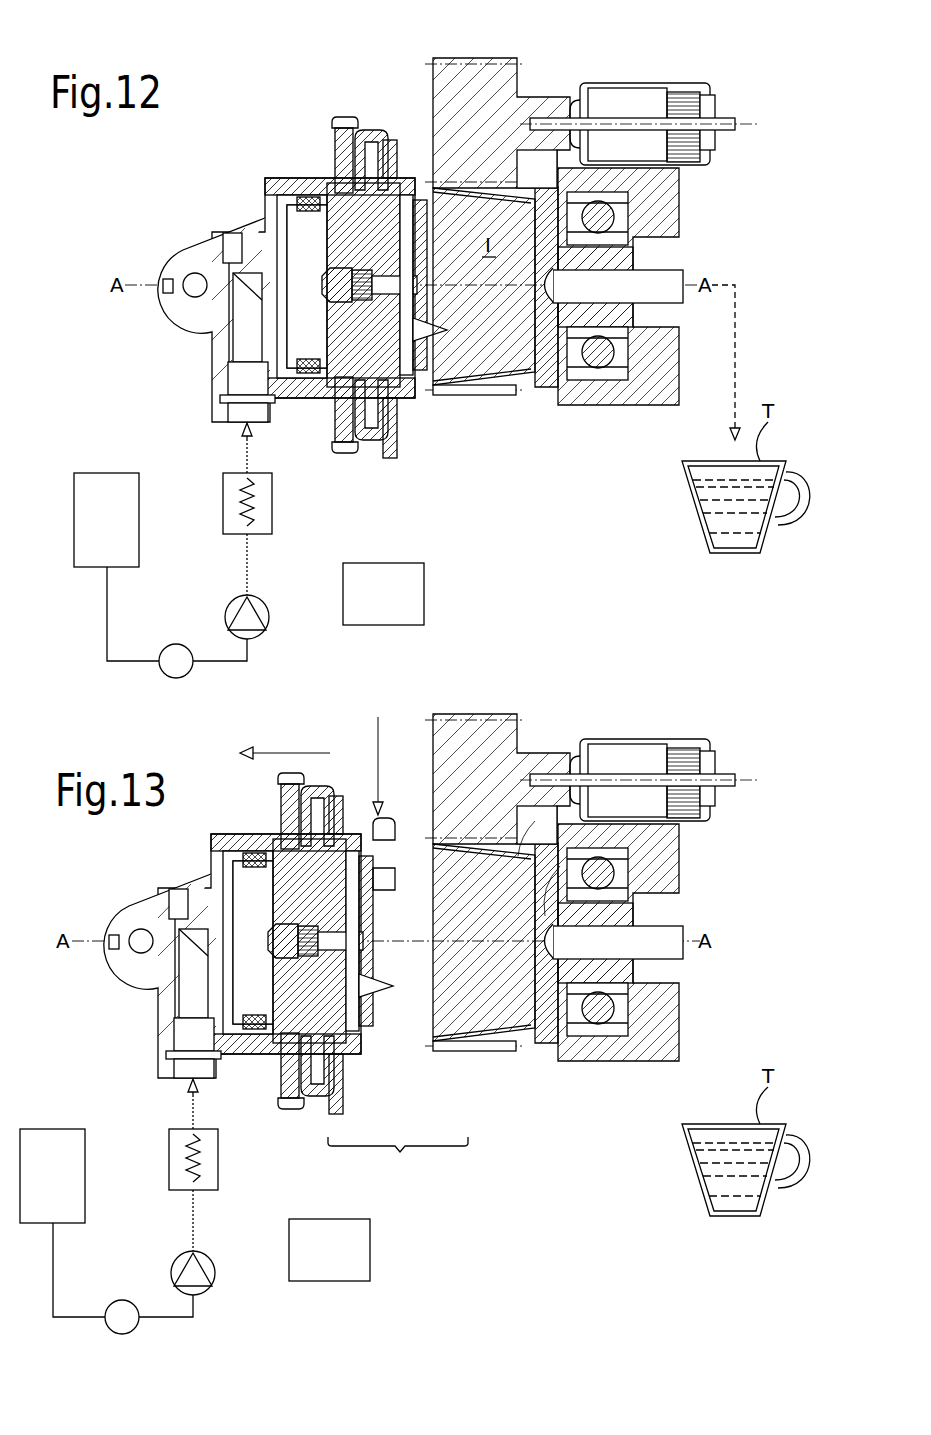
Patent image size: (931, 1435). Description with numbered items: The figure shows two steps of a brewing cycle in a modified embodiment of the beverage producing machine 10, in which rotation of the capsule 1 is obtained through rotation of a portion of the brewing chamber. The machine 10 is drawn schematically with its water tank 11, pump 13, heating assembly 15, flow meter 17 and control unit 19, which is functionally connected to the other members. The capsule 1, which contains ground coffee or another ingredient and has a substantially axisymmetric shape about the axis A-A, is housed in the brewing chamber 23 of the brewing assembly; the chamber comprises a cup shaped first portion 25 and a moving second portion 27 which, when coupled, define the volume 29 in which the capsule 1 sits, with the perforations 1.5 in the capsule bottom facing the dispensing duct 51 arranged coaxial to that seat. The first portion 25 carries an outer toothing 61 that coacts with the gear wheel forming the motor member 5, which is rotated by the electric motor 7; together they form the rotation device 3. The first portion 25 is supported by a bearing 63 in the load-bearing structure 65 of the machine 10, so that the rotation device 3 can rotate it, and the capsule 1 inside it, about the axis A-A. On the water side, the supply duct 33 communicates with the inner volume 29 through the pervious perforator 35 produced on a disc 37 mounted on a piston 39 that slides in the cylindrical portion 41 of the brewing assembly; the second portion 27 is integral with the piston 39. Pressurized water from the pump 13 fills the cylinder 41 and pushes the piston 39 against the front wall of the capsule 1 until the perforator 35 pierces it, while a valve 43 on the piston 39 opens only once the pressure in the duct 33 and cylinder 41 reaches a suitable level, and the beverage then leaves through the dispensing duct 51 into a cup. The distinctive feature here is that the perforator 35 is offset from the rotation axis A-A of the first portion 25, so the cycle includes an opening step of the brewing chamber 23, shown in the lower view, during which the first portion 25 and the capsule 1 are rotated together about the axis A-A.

In FIG. 12, the capsule 1 is at (465, 365).
In FIG. 13, the capsule 1 is at (484, 977).
In FIG. 12, the perforations 1.5 is at (549, 276).
In FIG. 13, the perforations 1.5 is at (583, 930).
In FIG. 12, the rotation device 3 is at (592, 59).
In FIG. 13, the rotation device 3 is at (568, 703).
In FIG. 12, the motor member 5 is at (466, 72).
In FIG. 13, the motor member 5 is at (495, 859).
In FIG. 12, the electric motor 7 is at (663, 83).
In FIG. 13, the electric motor 7 is at (640, 758).
In FIG. 12, the machine 10 is at (621, 43).
In FIG. 13, the machine 10 is at (630, 715).
In FIG. 12, the water tank 11 is at (74, 508).
In FIG. 13, the water tank 11 is at (42, 1169).
In FIG. 12, the pump 13 is at (226, 613).
In FIG. 13, the pump 13 is at (168, 1273).
In FIG. 12, the heating assembly 15 is at (223, 504).
In FIG. 13, the heating assembly 15 is at (171, 1173).
In FIG. 12, the flow meter 17 is at (174, 680).
In FIG. 13, the flow meter 17 is at (123, 1303).
In FIG. 12, the control unit 19 is at (390, 626).
In FIG. 13, the control unit 19 is at (329, 1283).
In FIG. 12, the brewing chamber 23 is at (441, 406).
In FIG. 13, the brewing chamber 23 is at (398, 1161).
In FIG. 12, the first portion of the brewing chamber 25 is at (528, 372).
In FIG. 13, the first portion of the brewing chamber 25 is at (549, 983).
In FIG. 12, the second portion of the brewing chamber 27 is at (413, 160).
In FIG. 13, the second portion of the brewing chamber 27 is at (318, 919).
In FIG. 12, the volume 29 is at (515, 192).
In FIG. 12, the water supply duct 33 is at (240, 345).
In FIG. 13, the water supply duct 33 is at (228, 965).
In FIG. 12, the perforator 35 is at (440, 330).
In FIG. 13, the perforator 35 is at (385, 970).
In FIG. 12, the disc 37 is at (408, 392).
In FIG. 13, the disc 37 is at (354, 955).
In FIG. 12, the piston 39 is at (335, 348).
In FIG. 13, the piston 39 is at (293, 941).
In FIG. 12, the cylindrical portion 41 is at (283, 215).
In FIG. 13, the cylindrical portion 41 is at (206, 928).
In FIG. 12, the valve 43 is at (330, 282).
In FIG. 13, the valve 43 is at (301, 924).
In FIG. 12, the dispensing duct 51 is at (672, 280).
In FIG. 13, the dispensing duct 51 is at (658, 924).
In FIG. 12, the outer toothing 61 is at (508, 388).
In FIG. 13, the outer toothing 61 is at (482, 978).
In FIG. 12, the bearing 63 is at (620, 215).
In FIG. 13, the bearing 63 is at (649, 942).
In FIG. 12, the load-bearing structure 65 is at (627, 400).
In FIG. 13, the load-bearing structure 65 is at (618, 974).